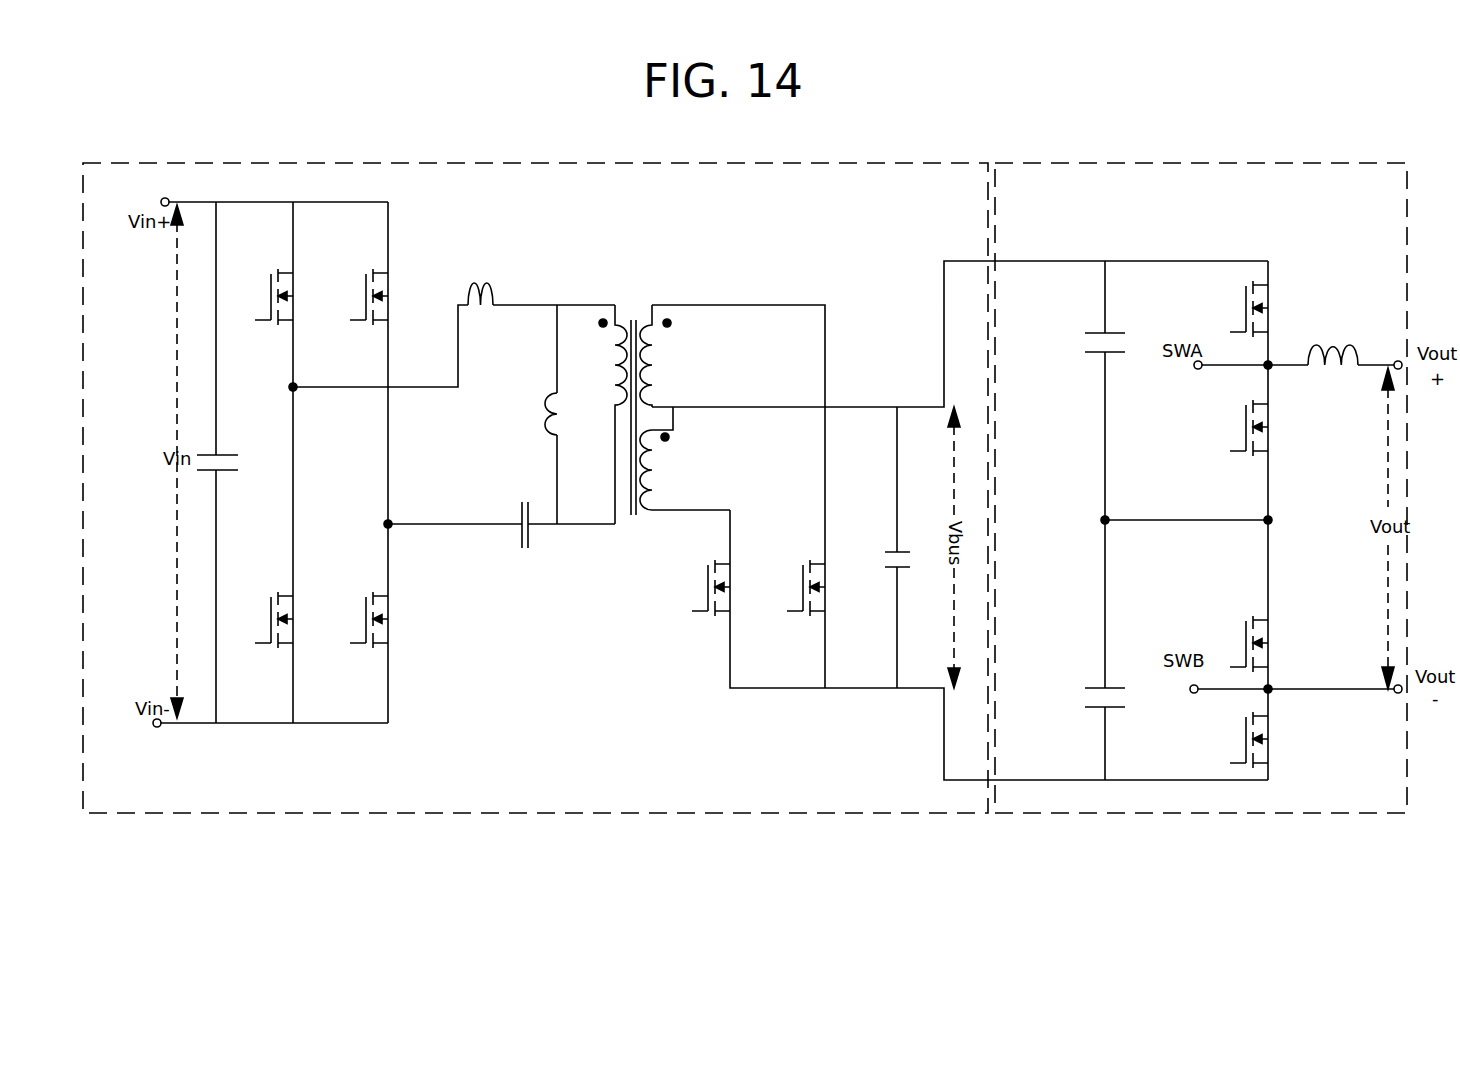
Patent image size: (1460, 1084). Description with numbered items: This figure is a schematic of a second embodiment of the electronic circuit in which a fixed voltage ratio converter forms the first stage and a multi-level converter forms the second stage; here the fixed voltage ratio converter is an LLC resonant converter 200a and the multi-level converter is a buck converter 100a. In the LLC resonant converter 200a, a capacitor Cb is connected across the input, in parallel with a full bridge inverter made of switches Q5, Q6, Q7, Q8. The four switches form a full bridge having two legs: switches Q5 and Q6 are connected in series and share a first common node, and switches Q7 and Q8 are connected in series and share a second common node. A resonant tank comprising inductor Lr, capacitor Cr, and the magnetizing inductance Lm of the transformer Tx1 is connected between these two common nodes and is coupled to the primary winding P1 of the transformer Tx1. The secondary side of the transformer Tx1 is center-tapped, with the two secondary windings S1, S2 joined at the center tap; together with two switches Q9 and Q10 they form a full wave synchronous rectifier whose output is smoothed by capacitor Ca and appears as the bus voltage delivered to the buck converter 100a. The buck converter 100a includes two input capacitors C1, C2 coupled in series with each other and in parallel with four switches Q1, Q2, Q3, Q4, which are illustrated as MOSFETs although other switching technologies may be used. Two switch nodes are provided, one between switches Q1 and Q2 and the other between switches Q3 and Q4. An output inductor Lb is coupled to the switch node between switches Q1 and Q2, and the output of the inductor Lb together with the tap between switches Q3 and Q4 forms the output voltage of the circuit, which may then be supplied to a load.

The LLC resonant converter 200a is at (555, 801).
The buck converter 100a is at (1222, 800).
The switch Q1 is at (1264, 309).
The switch Q2 is at (1264, 428).
The switch Q3 is at (1264, 644).
The switch Q4 is at (1264, 740).
The switch Q5 is at (288, 297).
The switch Q6 is at (288, 620).
The switch Q7 is at (383, 297).
The switch Q8 is at (383, 620).
The switch Q9 is at (727, 588).
The switch Q10 is at (828, 588).
The capacitor Cb is at (225, 462).
The capacitor Cr is at (531, 538).
The capacitor Ca is at (913, 560).
The input capacitor C1 is at (1083, 390).
The input capacitor C2 is at (1085, 650).
The inductor Lr is at (480, 281).
The magnetizing inductance Lm is at (534, 414).
The output inductor Lb is at (1333, 343).
The transformer Tx1 is at (658, 397).
The primary winding P1 is at (607, 414).
The secondary winding S1 is at (661, 356).
The secondary winding S2 is at (685, 458).